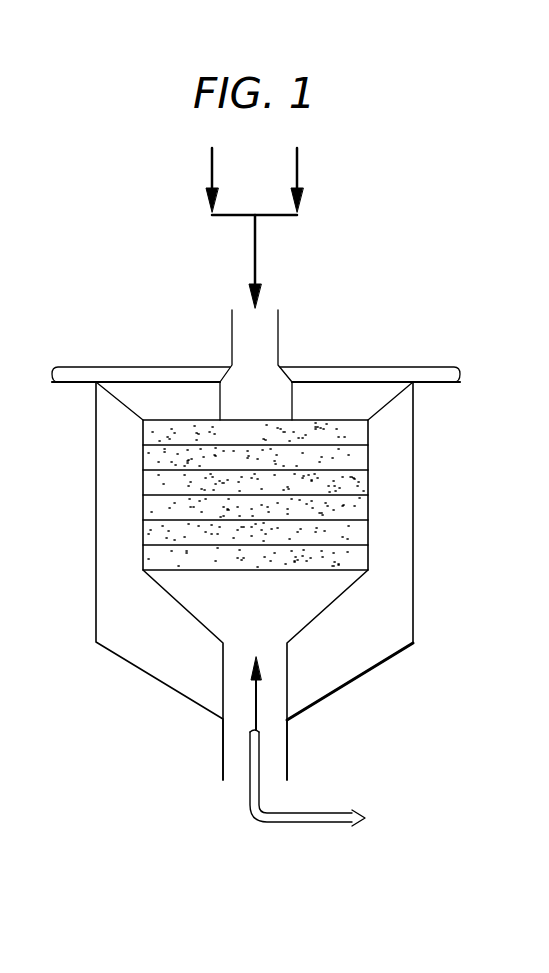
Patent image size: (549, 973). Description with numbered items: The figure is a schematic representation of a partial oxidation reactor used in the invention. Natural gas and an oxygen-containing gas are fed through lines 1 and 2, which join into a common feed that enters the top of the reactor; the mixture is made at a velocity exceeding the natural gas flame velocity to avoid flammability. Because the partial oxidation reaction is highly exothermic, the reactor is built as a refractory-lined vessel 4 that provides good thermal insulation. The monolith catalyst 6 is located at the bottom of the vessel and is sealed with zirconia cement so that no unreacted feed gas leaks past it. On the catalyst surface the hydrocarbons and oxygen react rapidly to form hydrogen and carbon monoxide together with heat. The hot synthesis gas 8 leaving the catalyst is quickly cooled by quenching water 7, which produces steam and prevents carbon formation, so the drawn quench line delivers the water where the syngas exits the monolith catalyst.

The line 1 is at (298, 168).
The line 2 is at (211, 168).
The refractory-lined vessel 4 is at (387, 543).
The monolith catalyst 6 is at (172, 515).
The quenching water 7 is at (256, 813).
The hot synthesis gas 8 is at (369, 818).